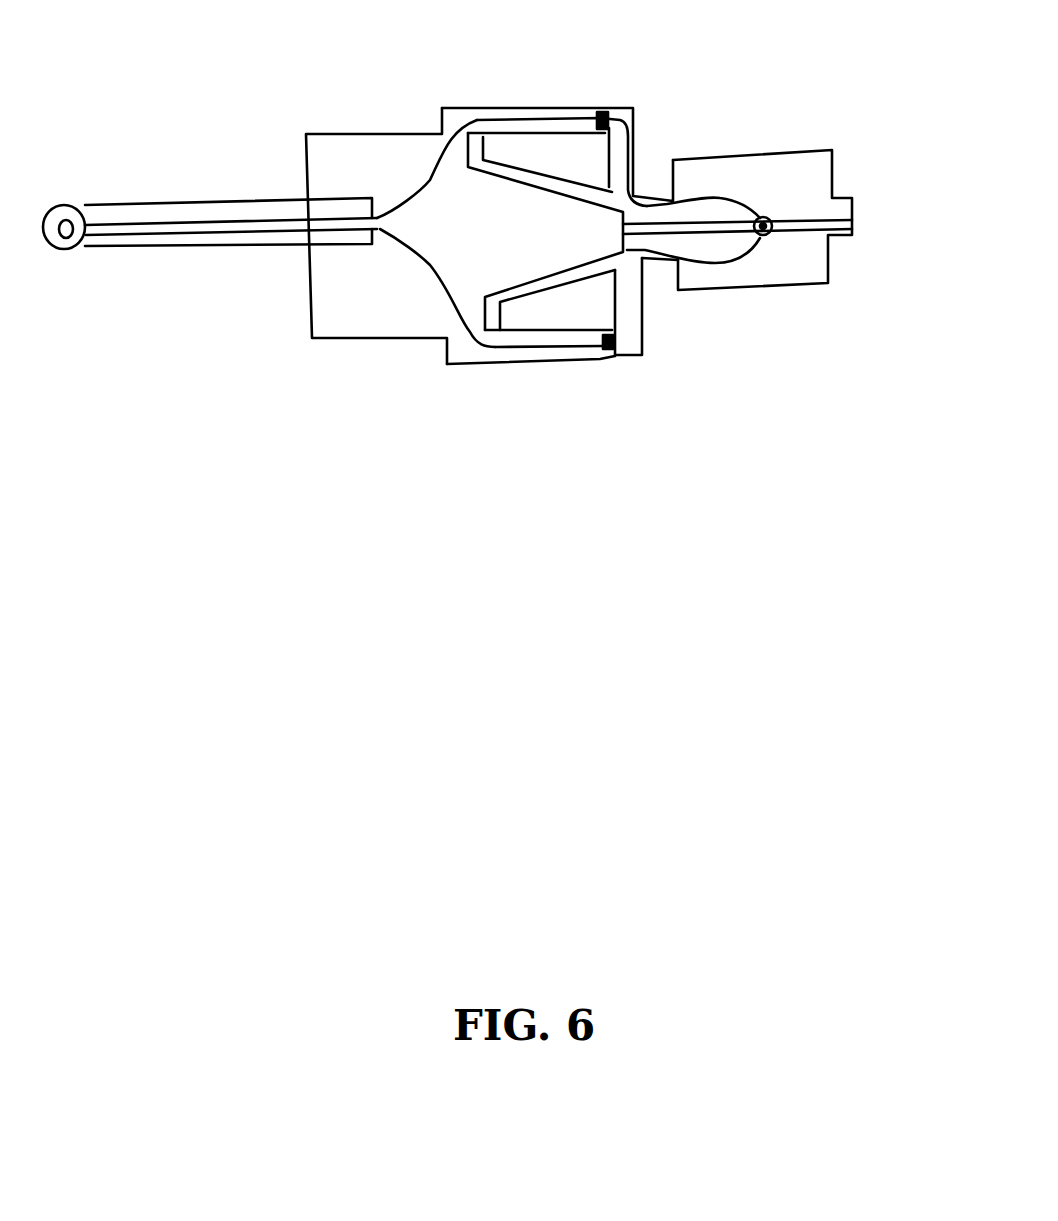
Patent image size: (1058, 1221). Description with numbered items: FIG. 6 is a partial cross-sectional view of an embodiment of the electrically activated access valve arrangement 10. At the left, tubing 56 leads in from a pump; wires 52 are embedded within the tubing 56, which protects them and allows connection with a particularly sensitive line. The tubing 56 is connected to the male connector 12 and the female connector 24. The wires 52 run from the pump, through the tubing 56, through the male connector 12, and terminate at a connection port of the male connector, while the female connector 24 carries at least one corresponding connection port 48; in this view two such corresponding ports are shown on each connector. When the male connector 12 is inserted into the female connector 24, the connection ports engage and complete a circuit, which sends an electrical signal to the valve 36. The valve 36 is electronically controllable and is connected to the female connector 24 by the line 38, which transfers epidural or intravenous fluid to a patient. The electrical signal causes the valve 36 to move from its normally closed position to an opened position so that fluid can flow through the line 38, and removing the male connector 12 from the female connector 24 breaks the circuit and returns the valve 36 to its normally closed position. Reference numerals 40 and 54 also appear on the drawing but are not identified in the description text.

The electrically activated access valve arrangement 10 is at (718, 68).
The male connector 12 is at (473, 358).
The female connector 24 is at (658, 263).
The valve 36 is at (767, 218).
The line 38 is at (852, 226).
The clamp block 40 is at (600, 352).
The connection port 48 is at (617, 353).
The wires 52 is at (428, 180).
The connector box 54 is at (307, 243).
The tubing 56 is at (100, 248).